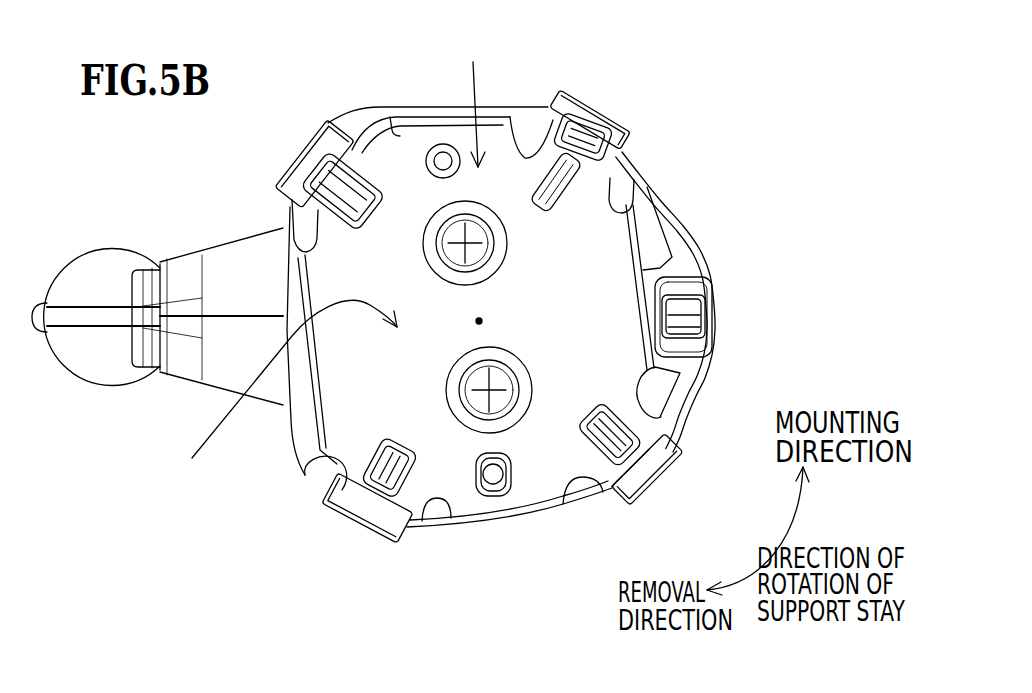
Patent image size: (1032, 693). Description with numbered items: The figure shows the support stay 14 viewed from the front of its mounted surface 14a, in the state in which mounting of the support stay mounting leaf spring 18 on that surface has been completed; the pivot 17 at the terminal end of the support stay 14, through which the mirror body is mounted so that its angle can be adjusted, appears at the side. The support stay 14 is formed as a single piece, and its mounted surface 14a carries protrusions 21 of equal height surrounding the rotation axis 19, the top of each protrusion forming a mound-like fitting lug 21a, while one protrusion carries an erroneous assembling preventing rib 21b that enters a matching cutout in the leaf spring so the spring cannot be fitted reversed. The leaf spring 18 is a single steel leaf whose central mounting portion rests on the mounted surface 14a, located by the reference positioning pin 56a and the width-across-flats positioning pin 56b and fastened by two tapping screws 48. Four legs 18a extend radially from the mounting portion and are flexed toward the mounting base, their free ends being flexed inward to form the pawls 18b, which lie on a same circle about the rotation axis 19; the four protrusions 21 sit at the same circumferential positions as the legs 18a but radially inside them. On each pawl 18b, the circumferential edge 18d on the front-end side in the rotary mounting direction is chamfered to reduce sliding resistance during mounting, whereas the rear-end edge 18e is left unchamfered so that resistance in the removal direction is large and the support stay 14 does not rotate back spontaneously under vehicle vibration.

The support stay 14 is at (705, 217).
The mounted surface 14a is at (281, 399).
The pivot 17 is at (102, 363).
The support stay mounting leaf spring 18 is at (473, 98).
The legs 18a is at (308, 160).
The pawls 18b is at (345, 150).
The circumferential edge on the front-end side in the rotary mounting direction 18d is at (663, 447).
The circumferential edge on the rear-end side in the rotary mounting direction 18e is at (605, 470).
The rotation axis 19 is at (481, 321).
The protrusions 21 is at (300, 212).
The fitting lug 21a is at (340, 165).
The erroneous assembling preventing rib 21b is at (517, 125).
The tapping screws 48 is at (470, 235).
The positioning pin 56a is at (442, 160).
The positioning pin 56b is at (493, 478).